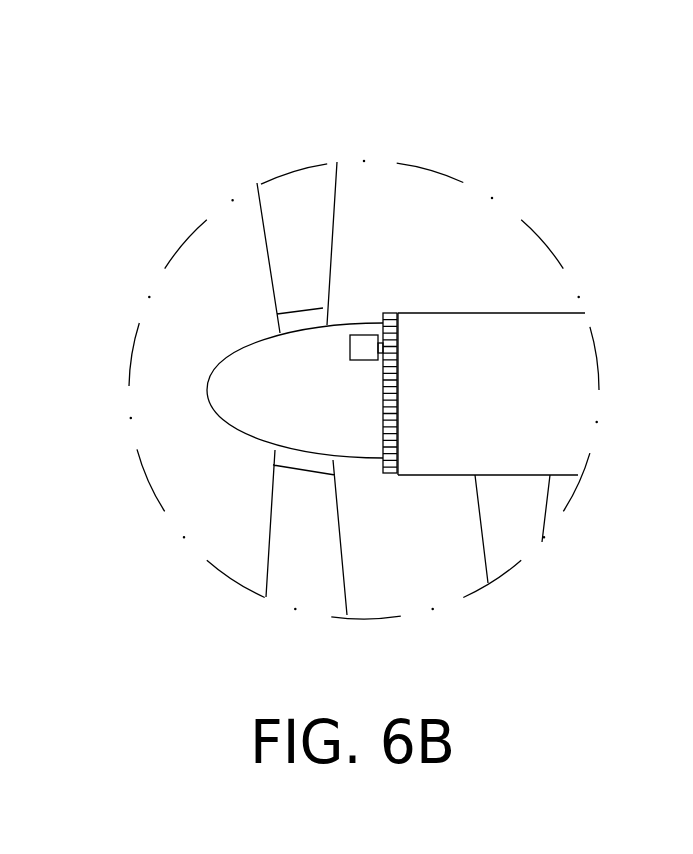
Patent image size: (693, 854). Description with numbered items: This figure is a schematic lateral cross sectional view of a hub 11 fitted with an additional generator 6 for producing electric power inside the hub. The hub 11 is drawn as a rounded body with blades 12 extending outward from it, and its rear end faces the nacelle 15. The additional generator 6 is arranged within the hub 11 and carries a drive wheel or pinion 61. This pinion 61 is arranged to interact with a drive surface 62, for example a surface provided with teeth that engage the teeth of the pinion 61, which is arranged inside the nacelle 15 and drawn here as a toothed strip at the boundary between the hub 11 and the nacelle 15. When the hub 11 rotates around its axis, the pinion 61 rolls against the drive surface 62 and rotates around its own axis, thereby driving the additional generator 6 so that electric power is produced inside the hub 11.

The additional generator 6 is at (364, 348).
The hub 11 is at (245, 398).
The fan blade 12 is at (303, 198).
The nacelle 15 is at (493, 330).
The drive wheel or pinion 61 is at (387, 348).
The drive surface 62 is at (393, 405).